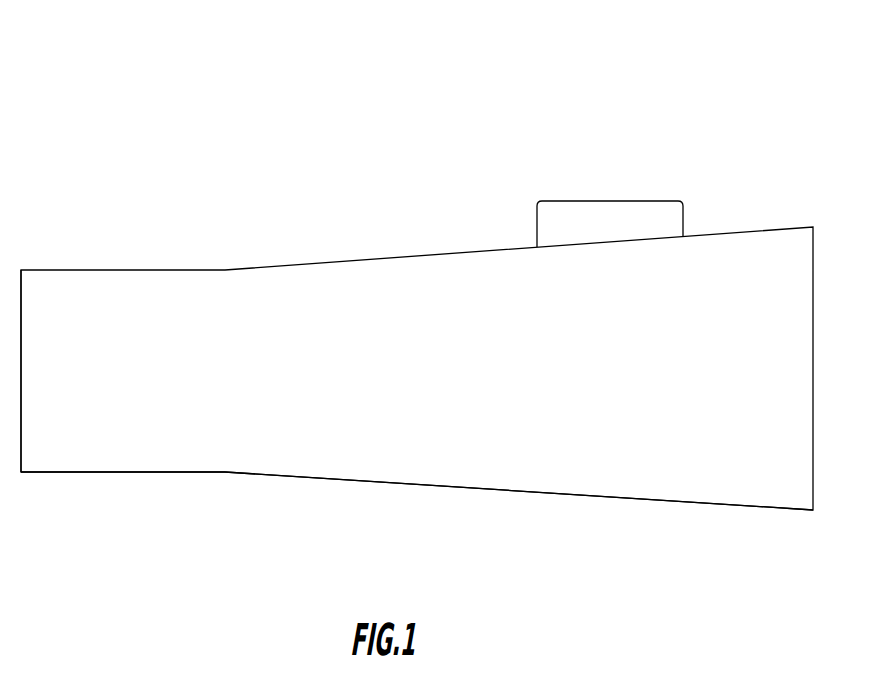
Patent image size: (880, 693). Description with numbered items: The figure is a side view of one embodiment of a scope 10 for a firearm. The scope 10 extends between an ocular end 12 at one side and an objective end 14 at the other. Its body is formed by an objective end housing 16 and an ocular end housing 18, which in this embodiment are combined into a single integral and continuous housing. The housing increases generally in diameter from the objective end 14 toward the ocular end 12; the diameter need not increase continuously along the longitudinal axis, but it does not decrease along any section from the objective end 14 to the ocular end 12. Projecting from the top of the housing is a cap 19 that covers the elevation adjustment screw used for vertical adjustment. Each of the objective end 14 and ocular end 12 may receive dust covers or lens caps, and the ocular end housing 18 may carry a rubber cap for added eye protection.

The scope 10 is at (96, 122).
The ocular end 12 is at (778, 501).
The objective end 14 is at (33, 473).
The objective end housing 16 is at (142, 455).
The ocular end housing 18 is at (685, 494).
The cap 19 is at (614, 214).